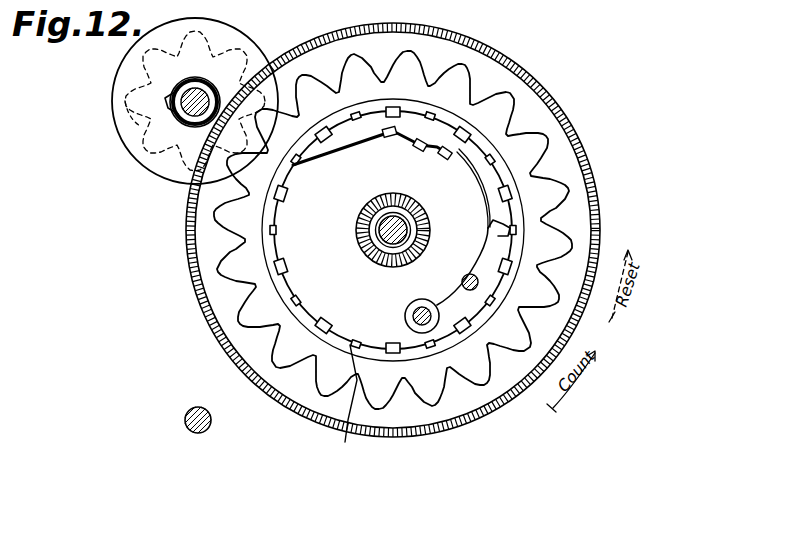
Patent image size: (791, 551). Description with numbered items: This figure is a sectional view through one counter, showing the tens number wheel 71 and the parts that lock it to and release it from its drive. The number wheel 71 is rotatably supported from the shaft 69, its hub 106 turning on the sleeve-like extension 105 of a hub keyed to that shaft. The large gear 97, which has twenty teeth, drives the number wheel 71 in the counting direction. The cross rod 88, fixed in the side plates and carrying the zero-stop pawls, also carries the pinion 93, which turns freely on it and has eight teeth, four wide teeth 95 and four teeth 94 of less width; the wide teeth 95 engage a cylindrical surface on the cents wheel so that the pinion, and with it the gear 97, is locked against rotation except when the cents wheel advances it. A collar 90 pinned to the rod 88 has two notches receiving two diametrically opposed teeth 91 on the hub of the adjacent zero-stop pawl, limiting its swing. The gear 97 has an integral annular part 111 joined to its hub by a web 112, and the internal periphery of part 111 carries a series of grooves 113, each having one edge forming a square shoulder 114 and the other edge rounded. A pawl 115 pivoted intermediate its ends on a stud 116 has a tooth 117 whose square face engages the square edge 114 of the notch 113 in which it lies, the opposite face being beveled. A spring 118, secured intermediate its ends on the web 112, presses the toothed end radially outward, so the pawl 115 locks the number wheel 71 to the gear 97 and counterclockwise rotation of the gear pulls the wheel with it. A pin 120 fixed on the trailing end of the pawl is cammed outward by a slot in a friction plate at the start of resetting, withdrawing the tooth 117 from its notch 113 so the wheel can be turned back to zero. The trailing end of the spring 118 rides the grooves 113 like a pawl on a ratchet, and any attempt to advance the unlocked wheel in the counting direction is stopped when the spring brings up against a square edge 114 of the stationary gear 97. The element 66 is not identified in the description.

The pin 66 is at (187, 412).
The shaft 69 is at (361, 216).
The number wheel 71 is at (590, 195).
The cross rod 88 is at (180, 112).
The collar 90 is at (212, 90).
The teeth 91 is at (193, 80).
The pinion 93 is at (110, 92).
The teeth of less width 94 is at (130, 62).
The wide teeth 95 is at (122, 117).
The large gear 97 is at (460, 68).
The sleeve-like extension 105 is at (391, 246).
The hub of number wheel 106 is at (375, 237).
The annular part 111 is at (503, 175).
The web 112 is at (372, 150).
The grooves 113 is at (490, 158).
The square shoulder 114 is at (345, 442).
The pawl 115 is at (484, 240).
The stud 116 is at (463, 277).
The tooth 117 is at (513, 232).
The spring 118 is at (471, 175).
The pin 120 is at (412, 316).